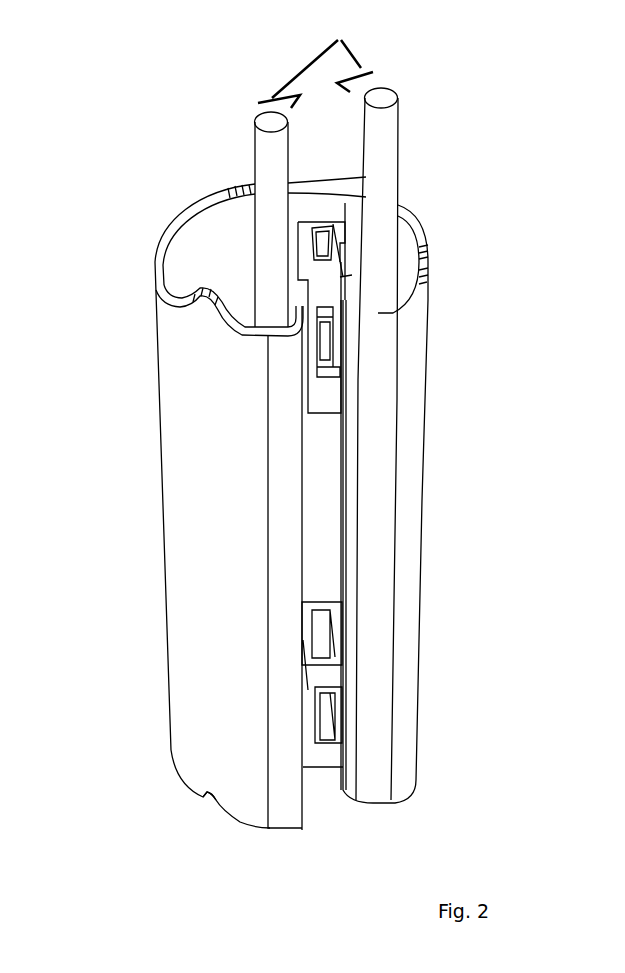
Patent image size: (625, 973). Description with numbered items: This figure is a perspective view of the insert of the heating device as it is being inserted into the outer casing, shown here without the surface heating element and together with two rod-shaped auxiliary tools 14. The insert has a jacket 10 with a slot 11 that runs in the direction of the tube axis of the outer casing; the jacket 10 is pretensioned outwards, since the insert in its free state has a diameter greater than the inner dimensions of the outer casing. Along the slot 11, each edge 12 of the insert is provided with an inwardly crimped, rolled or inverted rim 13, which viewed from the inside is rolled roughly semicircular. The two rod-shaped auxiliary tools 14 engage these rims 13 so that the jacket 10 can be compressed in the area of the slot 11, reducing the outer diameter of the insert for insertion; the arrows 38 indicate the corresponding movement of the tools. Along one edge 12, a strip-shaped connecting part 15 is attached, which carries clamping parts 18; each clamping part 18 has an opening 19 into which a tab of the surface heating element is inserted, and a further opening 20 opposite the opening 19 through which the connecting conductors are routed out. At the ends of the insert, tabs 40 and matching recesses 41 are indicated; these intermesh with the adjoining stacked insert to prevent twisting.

The jacket 10 is at (202, 748).
The slot 11 is at (325, 584).
The edge 12 is at (290, 336).
The rim 13 is at (375, 317).
The rod-shaped auxiliary tool 14 is at (377, 177).
The strip-shaped connecting part 15 is at (345, 504).
The clamping part 18 is at (323, 287).
The opening 19 is at (328, 351).
The further opening 20 is at (322, 238).
The insertion direction arrows 38 is at (315, 59).
The tab 40 is at (243, 182).
The recess 41 is at (213, 798).